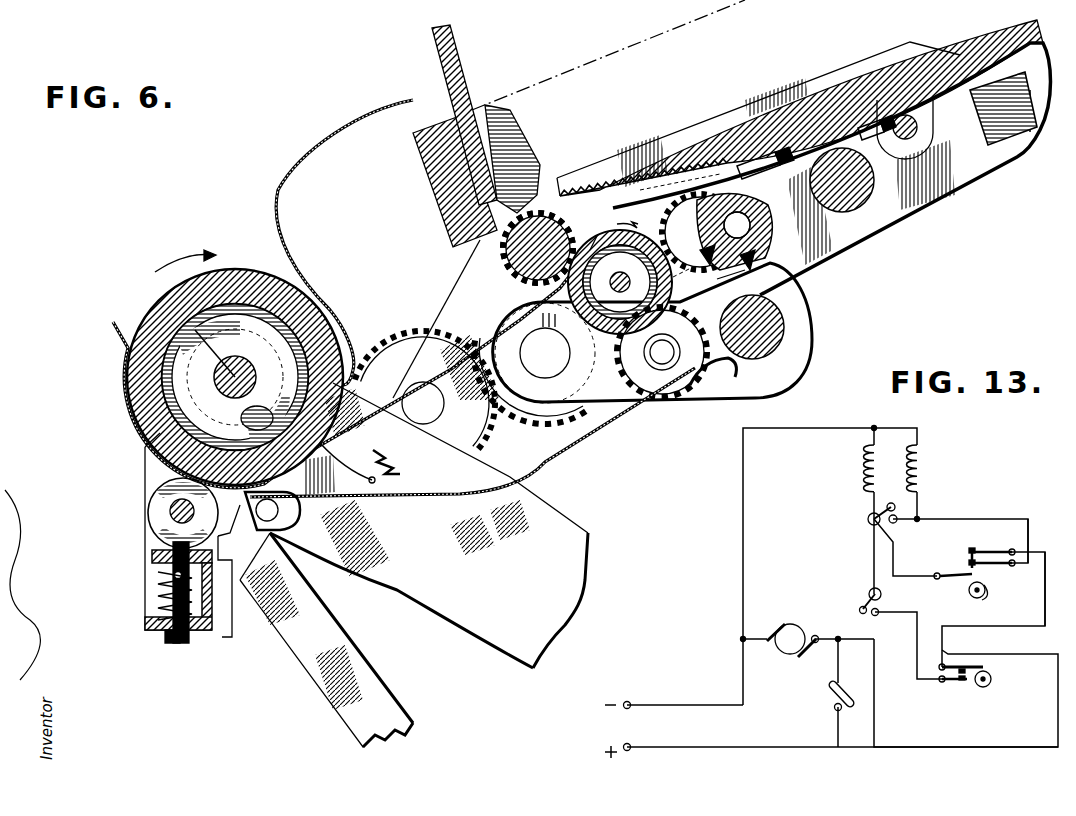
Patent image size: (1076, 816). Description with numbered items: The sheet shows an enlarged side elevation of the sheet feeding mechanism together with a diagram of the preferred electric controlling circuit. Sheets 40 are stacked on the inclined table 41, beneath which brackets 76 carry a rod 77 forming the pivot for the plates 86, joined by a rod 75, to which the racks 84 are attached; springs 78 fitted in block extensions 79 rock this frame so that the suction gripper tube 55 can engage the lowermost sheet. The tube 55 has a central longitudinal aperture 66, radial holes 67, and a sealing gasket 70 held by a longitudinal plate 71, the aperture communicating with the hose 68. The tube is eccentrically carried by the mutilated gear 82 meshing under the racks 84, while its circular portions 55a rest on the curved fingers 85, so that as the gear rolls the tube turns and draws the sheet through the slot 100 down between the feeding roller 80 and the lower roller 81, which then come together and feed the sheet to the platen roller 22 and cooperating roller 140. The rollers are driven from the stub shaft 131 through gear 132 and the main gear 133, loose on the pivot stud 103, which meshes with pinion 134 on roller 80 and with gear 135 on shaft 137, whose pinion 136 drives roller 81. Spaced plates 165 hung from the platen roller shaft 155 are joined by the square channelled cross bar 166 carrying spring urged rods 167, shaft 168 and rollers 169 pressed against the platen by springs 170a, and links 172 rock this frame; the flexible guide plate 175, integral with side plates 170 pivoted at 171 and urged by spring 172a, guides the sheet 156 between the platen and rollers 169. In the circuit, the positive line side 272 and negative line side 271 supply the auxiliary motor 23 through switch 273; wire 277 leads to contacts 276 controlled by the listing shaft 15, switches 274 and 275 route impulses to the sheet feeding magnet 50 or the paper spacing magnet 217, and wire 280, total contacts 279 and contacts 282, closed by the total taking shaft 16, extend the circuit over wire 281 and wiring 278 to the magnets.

In FIG. 6, the platen roller 22 is at (201, 367).
In FIG. 6, the platen roller supporting shaft 155 is at (157, 310).
In FIG. 6, the pivot 171 is at (258, 418).
In FIG. 6, the sheets 40 is at (513, 133).
In FIG. 6, the table 41 is at (752, 160).
In FIG. 6, the racks 84 is at (668, 146).
In FIG. 6, the slot 100 is at (603, 188).
In FIG. 6, the plates 86 is at (912, 200).
In FIG. 6, the block extensions 79 is at (1027, 132).
In FIG. 6, the springs 78 is at (1022, 63).
In FIG. 6, the rod 77 is at (917, 133).
In FIG. 6, the brackets 76 is at (833, 133).
In FIG. 6, the rod 75 is at (857, 198).
In FIG. 6, the suction gripper tube 55 is at (745, 223).
In FIG. 6, the circular portions 55a is at (700, 232).
In FIG. 6, the radial holes 67 is at (750, 236).
In FIG. 6, the central longitudinal aperture 66 is at (742, 229).
In FIG. 6, the hose 68 is at (797, 279).
In FIG. 6, the longitudinal plate 71 is at (720, 277).
In FIG. 6, the sealing gasket 70 is at (733, 287).
In FIG. 6, the gear 133 is at (538, 421).
In FIG. 6, the pivot studs 103 is at (552, 364).
In FIG. 6, the gear 132 is at (390, 350).
In FIG. 6, the stub shaft 131 is at (418, 383).
In FIG. 6, the feeding roller 80 is at (505, 246).
In FIG. 6, the pinion 134 is at (490, 264).
In FIG. 6, the mutilated gear 82 is at (620, 282).
In FIG. 6, the roller 81 is at (607, 300).
In FIG. 6, the curved fingers 85 is at (596, 236).
In FIG. 6, the gear 135 is at (660, 400).
In FIG. 6, the shaft 137 is at (642, 406).
In FIG. 6, the pinion 136 is at (690, 395).
In FIG. 6, the flexible guide plate 175 is at (577, 447).
In FIG. 6, the cooperating roller 140 is at (145, 527).
In FIG. 6, the shaft 168 is at (154, 505).
In FIG. 6, the rollers 169 is at (175, 512).
In FIG. 6, the spring urged rods 167 is at (163, 571).
In FIG. 6, the springs 170a is at (163, 608).
In FIG. 6, the square channelled cross bar 166 is at (206, 637).
In FIG. 6, the spaced plates 165 is at (236, 527).
In FIG. 6, the link 172 is at (373, 677).
In FIG. 6, the spring 172a is at (400, 473).
In FIG. 6, the side plates 170 is at (335, 480).
In FIG. 6, the sheet 156 is at (530, 499).
In FIG. 13, the circuit wiring 278 is at (745, 531).
In FIG. 13, the wire 277 is at (925, 745).
In FIG. 13, the paper spacing magnet 217 is at (865, 488).
In FIG. 13, the sheet feeding magnet 50 is at (925, 468).
In FIG. 13, the switch 275 is at (893, 527).
In FIG. 13, the wire 281 is at (1018, 518).
In FIG. 13, the total contacts 279 is at (982, 556).
In FIG. 13, the contacts 282 is at (982, 573).
In FIG. 13, the total taking shaft 16 is at (969, 601).
In FIG. 13, the wire 280 is at (1043, 596).
In FIG. 13, the switch 274 is at (883, 605).
In FIG. 13, the auxiliary motor 23 is at (800, 626).
In FIG. 13, the switch 273 is at (832, 698).
In FIG. 13, the contacts 276 is at (963, 690).
In FIG. 13, the listing shaft 15 is at (992, 680).
In FIG. 13, the negative line side 271 is at (637, 705).
In FIG. 13, the positive line side 272 is at (636, 745).